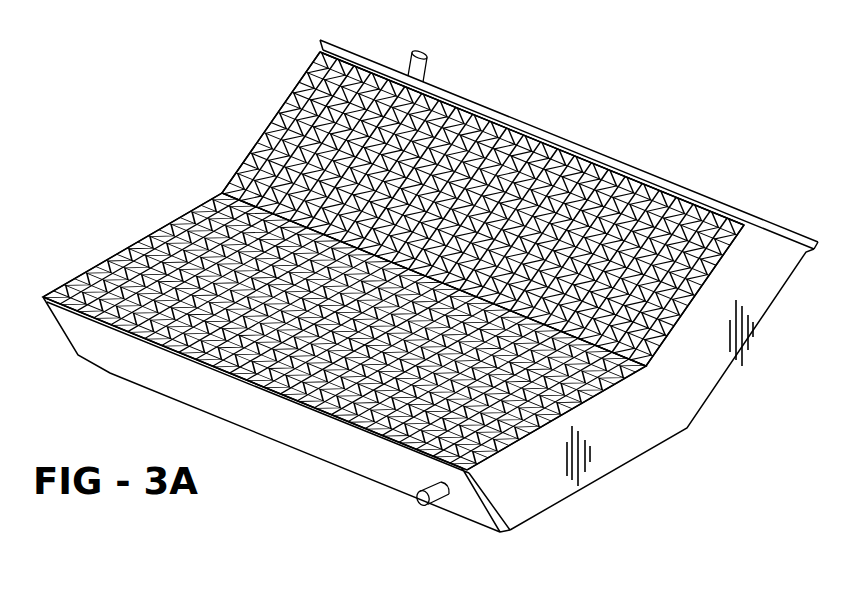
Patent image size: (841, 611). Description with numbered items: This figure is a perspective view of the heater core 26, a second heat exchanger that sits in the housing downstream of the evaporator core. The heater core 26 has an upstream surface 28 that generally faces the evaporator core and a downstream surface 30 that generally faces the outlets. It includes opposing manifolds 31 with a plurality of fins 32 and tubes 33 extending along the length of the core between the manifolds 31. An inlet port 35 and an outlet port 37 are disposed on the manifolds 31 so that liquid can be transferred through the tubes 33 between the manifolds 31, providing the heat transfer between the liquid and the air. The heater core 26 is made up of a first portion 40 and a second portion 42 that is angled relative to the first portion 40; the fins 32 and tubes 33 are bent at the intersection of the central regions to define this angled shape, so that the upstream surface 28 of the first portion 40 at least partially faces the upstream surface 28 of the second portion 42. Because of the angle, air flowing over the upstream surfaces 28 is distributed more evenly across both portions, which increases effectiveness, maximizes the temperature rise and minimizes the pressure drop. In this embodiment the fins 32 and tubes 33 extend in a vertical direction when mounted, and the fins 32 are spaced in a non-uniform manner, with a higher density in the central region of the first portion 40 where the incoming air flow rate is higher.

The heater core 26 is at (176, 204).
The upstream surface 28 is at (661, 187).
The downstream surface 30 is at (722, 385).
The manifolds 31 is at (135, 363).
The fins 32 is at (302, 383).
The tubes 33 is at (573, 173).
The inlet port 35 is at (428, 62).
The outlet port 37 is at (440, 498).
The first portion 40 is at (292, 97).
The second portion 42 is at (519, 491).